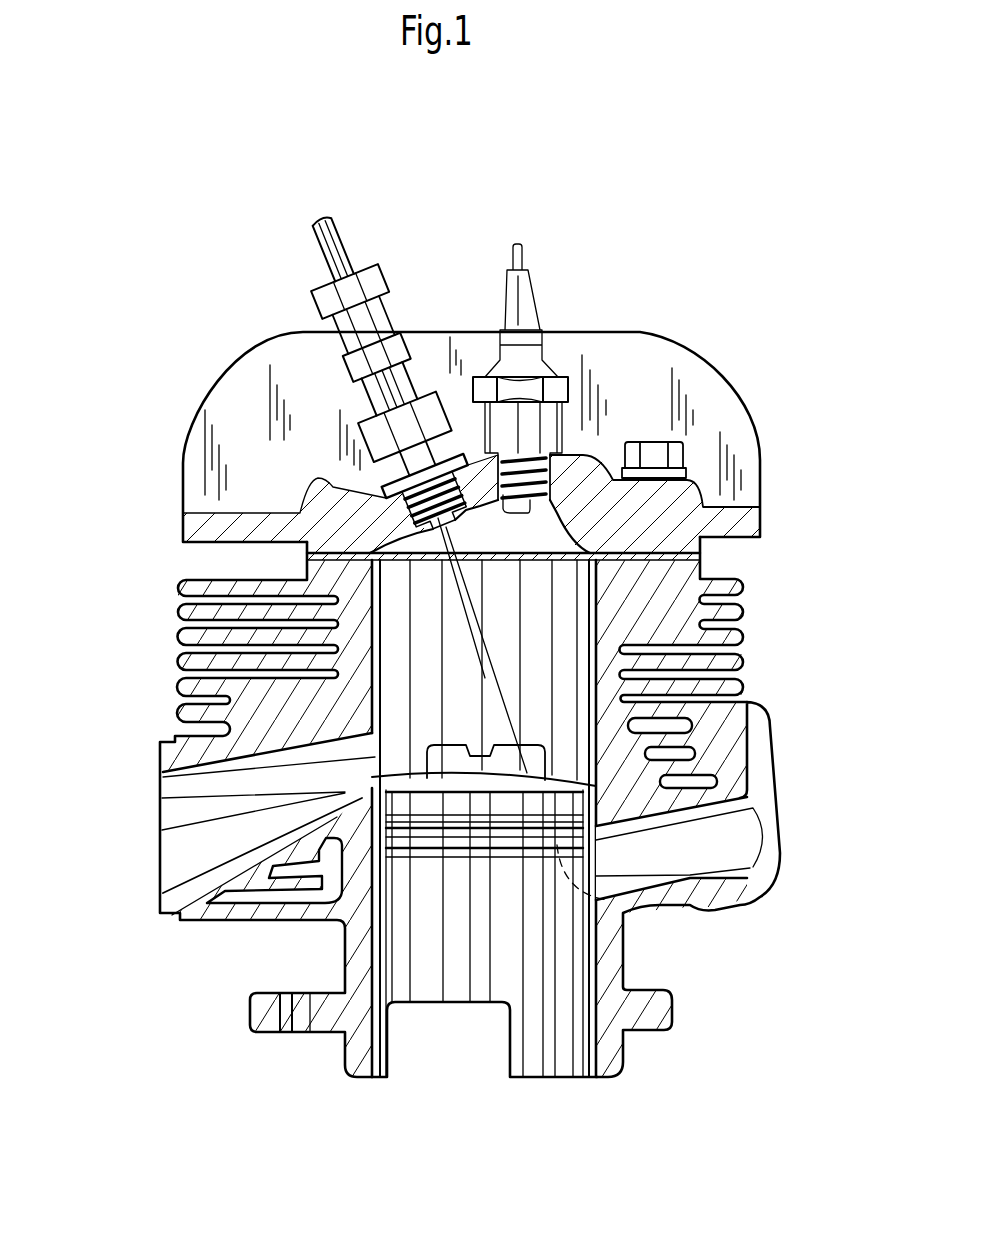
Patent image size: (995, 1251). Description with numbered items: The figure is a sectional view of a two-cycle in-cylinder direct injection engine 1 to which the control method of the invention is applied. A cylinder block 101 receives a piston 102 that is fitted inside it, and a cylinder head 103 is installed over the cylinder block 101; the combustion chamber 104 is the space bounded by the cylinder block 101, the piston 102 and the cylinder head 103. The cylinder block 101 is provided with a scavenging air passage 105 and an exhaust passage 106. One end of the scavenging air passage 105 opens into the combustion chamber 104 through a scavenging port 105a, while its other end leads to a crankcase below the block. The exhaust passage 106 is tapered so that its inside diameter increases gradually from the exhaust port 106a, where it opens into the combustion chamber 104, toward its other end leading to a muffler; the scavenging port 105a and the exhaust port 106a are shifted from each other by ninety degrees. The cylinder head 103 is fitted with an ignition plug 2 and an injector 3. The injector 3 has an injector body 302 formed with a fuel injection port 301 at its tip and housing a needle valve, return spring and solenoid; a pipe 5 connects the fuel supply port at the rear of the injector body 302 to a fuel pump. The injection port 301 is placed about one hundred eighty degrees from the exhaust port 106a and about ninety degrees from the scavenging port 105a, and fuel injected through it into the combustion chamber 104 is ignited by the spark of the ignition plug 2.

The two-cycle in-cylinder direct injection engine 1 is at (706, 307).
The ignition plug 2 is at (523, 303).
The injector 3 is at (323, 473).
The pipe 5 is at (337, 232).
The fuel injection port 301 is at (323, 564).
The injector body 302 is at (368, 402).
The cylinder block 101 is at (745, 608).
The piston 102 is at (560, 947).
The cylinder head 103 is at (697, 500).
The combustion chamber 104 is at (395, 640).
The scavenging air passage 105 is at (727, 840).
The scavenging port 105a is at (160, 775).
The exhaust passage 106 is at (212, 877).
The exhaust port 106a is at (352, 758).